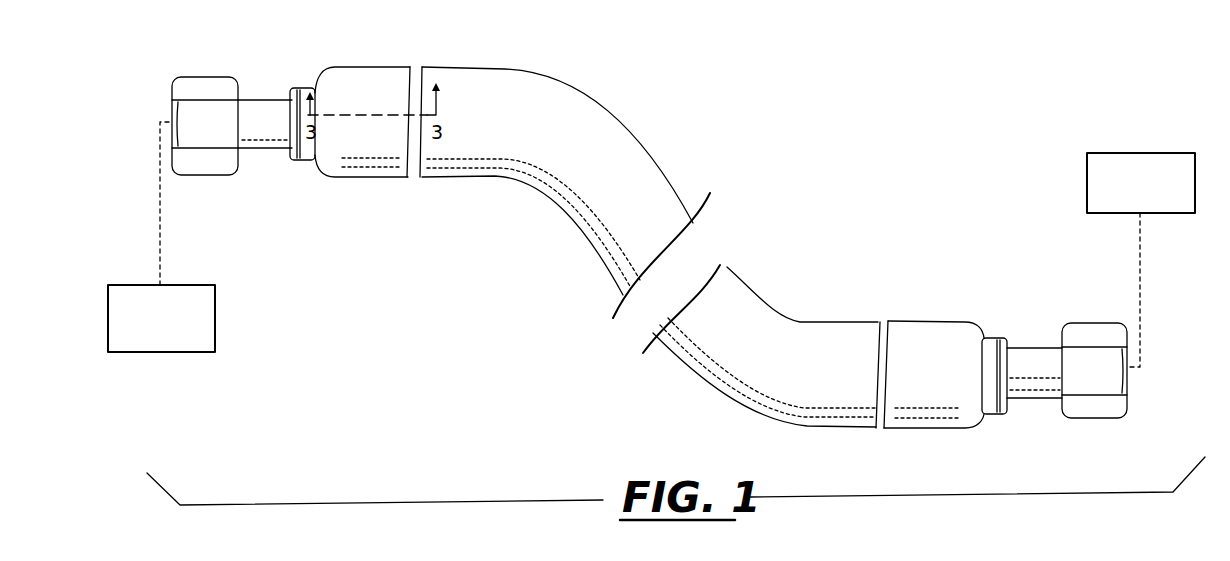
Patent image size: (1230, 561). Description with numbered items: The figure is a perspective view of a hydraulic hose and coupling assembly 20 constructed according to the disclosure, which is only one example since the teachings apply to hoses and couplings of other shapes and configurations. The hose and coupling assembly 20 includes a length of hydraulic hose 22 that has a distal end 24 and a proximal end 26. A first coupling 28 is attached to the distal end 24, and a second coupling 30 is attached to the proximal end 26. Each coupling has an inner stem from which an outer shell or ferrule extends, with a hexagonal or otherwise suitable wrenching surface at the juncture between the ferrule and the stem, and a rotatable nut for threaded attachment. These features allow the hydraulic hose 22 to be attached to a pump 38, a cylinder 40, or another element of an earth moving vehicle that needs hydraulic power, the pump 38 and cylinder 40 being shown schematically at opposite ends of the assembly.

The hydraulic hose and coupling assembly 20 is at (625, 253).
The hydraulic hose 22 is at (650, 247).
The distal end 24 is at (460, 134).
The proximal end 26 is at (863, 350).
The first coupling 28 is at (272, 167).
The second coupling 30 is at (1001, 365).
The pump 38 is at (1135, 165).
The cylinder 40 is at (190, 344).